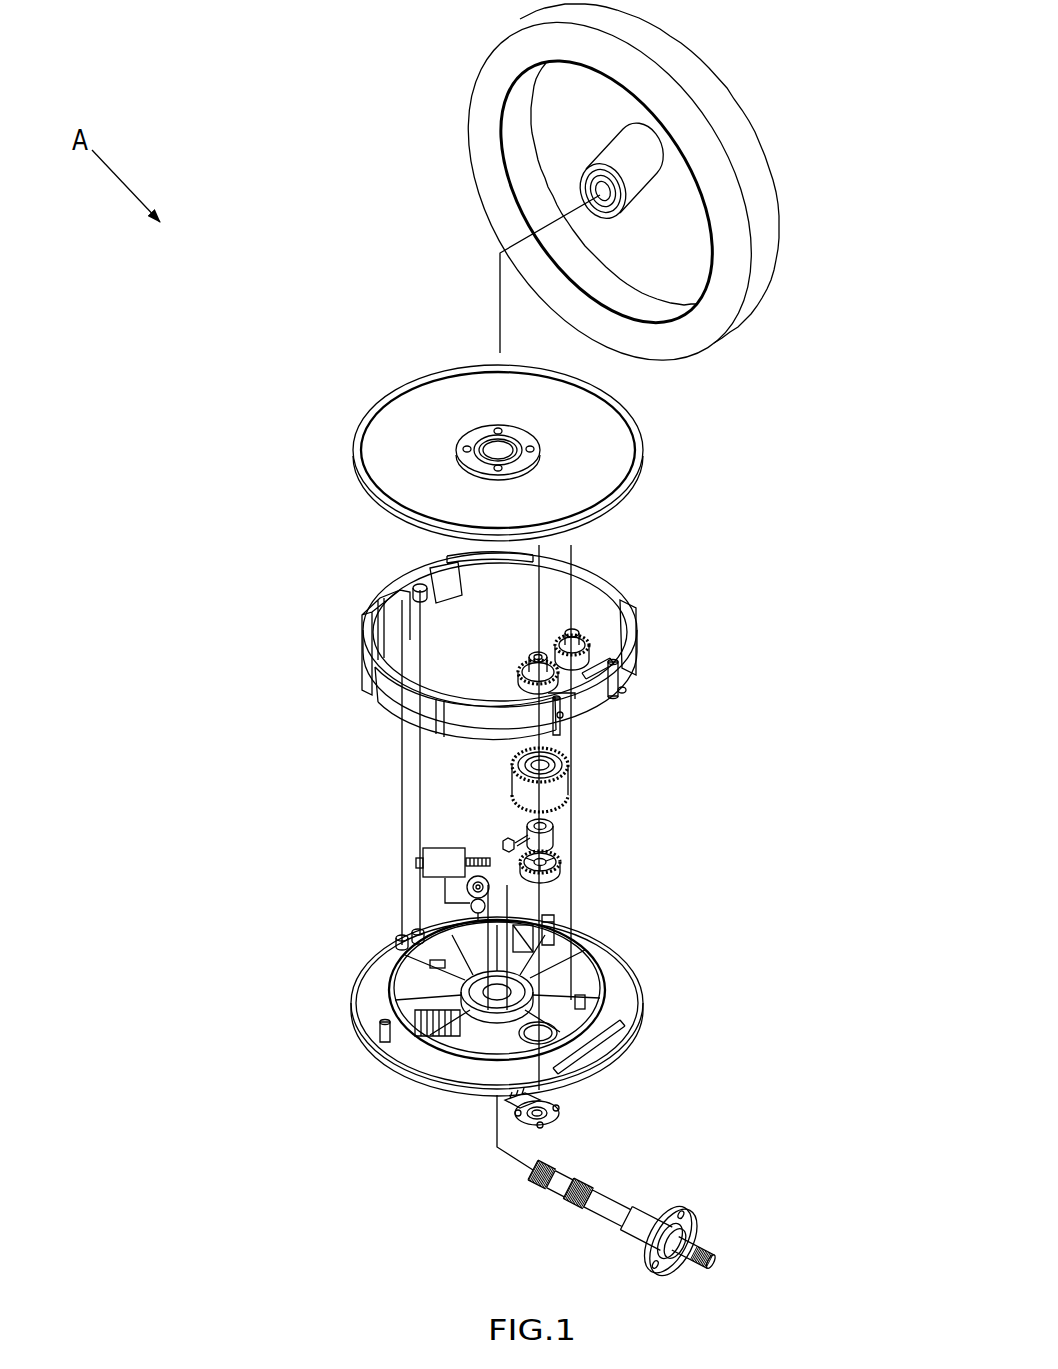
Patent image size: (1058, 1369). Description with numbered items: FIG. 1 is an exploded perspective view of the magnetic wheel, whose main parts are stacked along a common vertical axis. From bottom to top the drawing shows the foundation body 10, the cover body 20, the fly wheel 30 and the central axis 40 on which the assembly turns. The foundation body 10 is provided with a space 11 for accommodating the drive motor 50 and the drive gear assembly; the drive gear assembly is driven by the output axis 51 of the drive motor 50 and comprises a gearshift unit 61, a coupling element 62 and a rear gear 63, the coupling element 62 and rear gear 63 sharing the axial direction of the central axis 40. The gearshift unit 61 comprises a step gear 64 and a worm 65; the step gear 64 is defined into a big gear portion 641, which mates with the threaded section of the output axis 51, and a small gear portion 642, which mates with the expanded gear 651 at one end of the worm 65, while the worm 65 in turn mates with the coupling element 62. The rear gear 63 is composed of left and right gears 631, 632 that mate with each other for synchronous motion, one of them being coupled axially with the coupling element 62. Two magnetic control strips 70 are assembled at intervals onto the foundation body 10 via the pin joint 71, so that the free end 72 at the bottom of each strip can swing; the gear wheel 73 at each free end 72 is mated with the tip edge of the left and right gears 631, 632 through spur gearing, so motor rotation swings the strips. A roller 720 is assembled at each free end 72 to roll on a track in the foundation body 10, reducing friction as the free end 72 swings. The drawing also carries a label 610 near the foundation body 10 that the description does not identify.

The foundation body 10 is at (501, 1006).
The space 11 is at (437, 1025).
The cover body 20 is at (632, 418).
The fly wheel 30 is at (762, 268).
The central axis 40 is at (633, 1203).
The drive motor 50 is at (442, 847).
The output axis 51 is at (478, 848).
The gearshift unit 61 is at (500, 860).
The coupling element 62 is at (563, 777).
The rear gear 63 is at (625, 603).
The left gear 631 is at (547, 652).
The right gear 632 is at (590, 647).
The step gear 64 is at (373, 875).
The big gear portion 641 is at (462, 907).
The small gear portion 642 is at (470, 878).
The worm 65 is at (584, 898).
The expanded gear 651 is at (517, 880).
The mounting bosses 610 is at (402, 932).
The magnetic control strips 70 is at (530, 580).
The pin joint 71 is at (408, 578).
The free end 72 is at (622, 688).
The gear wheel 73 is at (607, 652).
The roller 720 is at (625, 660).